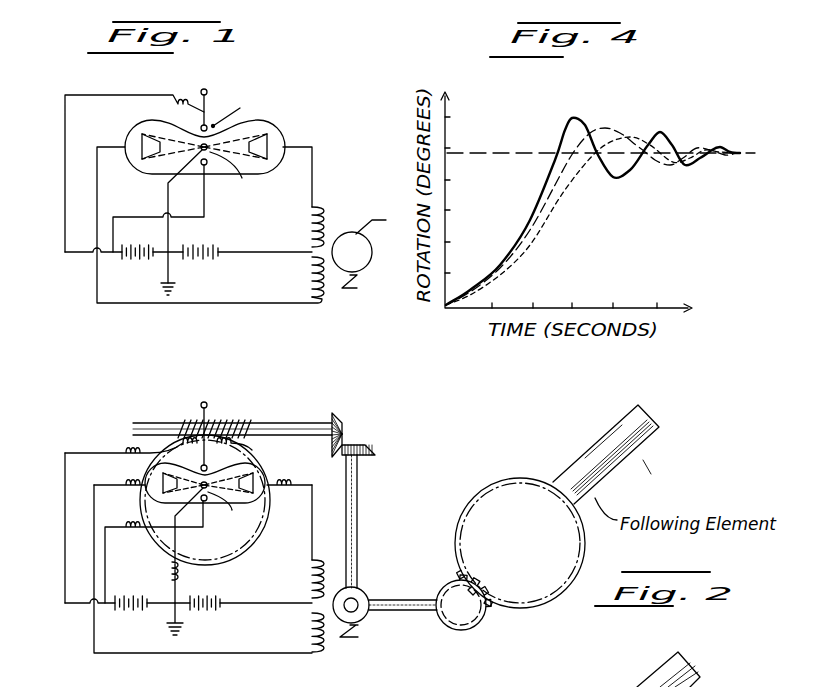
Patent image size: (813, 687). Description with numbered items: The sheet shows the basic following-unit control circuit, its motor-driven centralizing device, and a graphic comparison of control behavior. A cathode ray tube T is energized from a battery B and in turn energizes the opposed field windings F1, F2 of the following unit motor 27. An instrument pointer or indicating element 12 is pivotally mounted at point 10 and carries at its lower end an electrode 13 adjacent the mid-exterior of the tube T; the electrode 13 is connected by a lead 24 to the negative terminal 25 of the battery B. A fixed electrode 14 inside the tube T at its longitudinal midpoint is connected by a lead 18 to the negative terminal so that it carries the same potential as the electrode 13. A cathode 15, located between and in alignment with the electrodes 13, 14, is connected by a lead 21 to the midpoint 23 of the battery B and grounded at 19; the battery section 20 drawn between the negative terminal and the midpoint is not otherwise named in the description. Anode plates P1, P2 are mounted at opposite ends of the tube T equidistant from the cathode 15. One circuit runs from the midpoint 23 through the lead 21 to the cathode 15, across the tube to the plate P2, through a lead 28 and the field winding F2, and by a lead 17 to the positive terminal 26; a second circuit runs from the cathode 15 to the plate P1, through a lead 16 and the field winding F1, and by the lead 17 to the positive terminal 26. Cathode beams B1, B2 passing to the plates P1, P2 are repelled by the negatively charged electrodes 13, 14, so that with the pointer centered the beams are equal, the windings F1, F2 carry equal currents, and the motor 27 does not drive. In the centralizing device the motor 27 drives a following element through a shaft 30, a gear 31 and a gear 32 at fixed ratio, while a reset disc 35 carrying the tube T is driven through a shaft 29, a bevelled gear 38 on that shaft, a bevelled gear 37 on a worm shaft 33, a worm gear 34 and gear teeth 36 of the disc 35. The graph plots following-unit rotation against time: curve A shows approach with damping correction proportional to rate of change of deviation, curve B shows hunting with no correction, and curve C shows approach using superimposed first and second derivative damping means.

In FIG. 1, the pivot point 10 is at (201, 90).
In FIG. 2, the pivot point 10 is at (207, 401).
In FIG. 1, the indicating element 12 is at (207, 122).
In FIG. 2, the indicating element 12 is at (237, 453).
In FIG. 1, the electrode 13 is at (237, 112).
In FIG. 2, the electrode 13 is at (207, 470).
In FIG. 1, the fixed electrode 14 is at (207, 166).
In FIG. 2, the fixed electrode 14 is at (208, 503).
In FIG. 1, the cathode 15 is at (234, 172).
In FIG. 2, the cathode 15 is at (228, 509).
In FIG. 1, the lead 16 is at (224, 305).
In FIG. 2, the lead 16 is at (190, 655).
In FIG. 1, the lead 17 is at (258, 254).
In FIG. 2, the lead 17 is at (245, 605).
In FIG. 1, the lead 18 is at (134, 217).
In FIG. 2, the lead 18 is at (110, 530).
In FIG. 1, the ground 19 is at (180, 291).
In FIG. 2, the ground 19 is at (170, 633).
In FIG. 1, the battery 20 is at (128, 262).
In FIG. 2, the battery 20 is at (128, 600).
In FIG. 1, the lead 21 is at (170, 237).
In FIG. 2, the lead 21 is at (177, 590).
In FIG. 1, the midpoint of battery 23 is at (170, 256).
In FIG. 2, the midpoint of battery 23 is at (180, 604).
In FIG. 1, the lead 24 is at (65, 205).
In FIG. 2, the lead 24 is at (65, 488).
In FIG. 1, the negative terminal 25 is at (112, 254).
In FIG. 2, the negative terminal 25 is at (110, 606).
In FIG. 1, the positive terminal 26 is at (232, 252).
In FIG. 2, the positive terminal 26 is at (234, 602).
In FIG. 1, the following unit motor 27 is at (367, 272).
In FIG. 2, the following unit motor 27 is at (355, 590).
In FIG. 1, the lead 28 is at (312, 165).
In FIG. 2, the lead 28 is at (312, 505).
In FIG. 2, the shaft 29 is at (357, 516).
In FIG. 2, the shaft 30 is at (400, 611).
In FIG. 2, the gear 31 is at (460, 630).
In FIG. 2, the gear 32 is at (518, 490).
In FIG. 2, the worm shaft 33 is at (308, 423).
In FIG. 2, the worm gear 34 is at (226, 423).
In FIG. 2, the reset disc 35 is at (155, 450).
In FIG. 2, the gear teeth 36 is at (176, 432).
In FIG. 2, the bevelled gear 37 is at (342, 423).
In FIG. 2, the bevelled gear 38 is at (365, 446).
In FIG. 1, the cathode ray tube T is at (258, 125).
In FIG. 2, the cathode ray tube T is at (262, 503).
In FIG. 1, the anode plate P1 is at (125, 140).
In FIG. 2, the anode plate P1 is at (148, 481).
In FIG. 1, the anode plate P2 is at (283, 140).
In FIG. 2, the anode plate P2 is at (268, 480).
In FIG. 1, the cathode beam B1 is at (172, 146).
In FIG. 2, the cathode beam B1 is at (178, 477).
In FIG. 1, the cathode beam B2 is at (235, 146).
In FIG. 2, the cathode beam B2 is at (248, 478).
In FIG. 1, the battery B is at (158, 261).
In FIG. 4, the battery B is at (527, 197).
In FIG. 2, the battery B is at (183, 606).
In FIG. 1, the field winding F1 is at (328, 296).
In FIG. 2, the field winding F1 is at (312, 630).
In FIG. 1, the field winding F2 is at (328, 215).
In FIG. 2, the field winding F2 is at (312, 578).
In FIG. 4, the curve A is at (553, 195).
In FIG. 4, the curve C is at (550, 213).